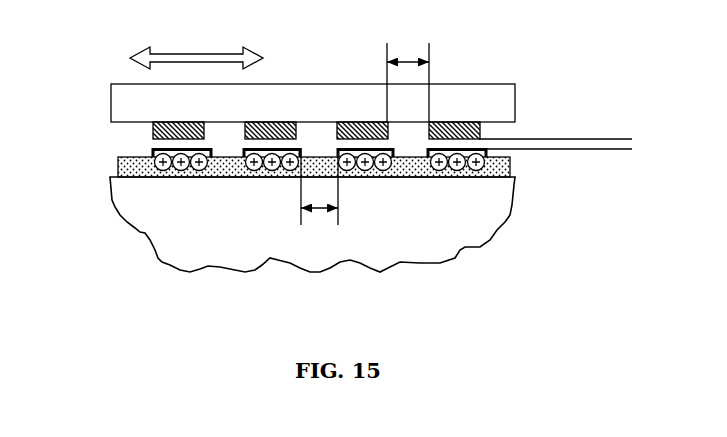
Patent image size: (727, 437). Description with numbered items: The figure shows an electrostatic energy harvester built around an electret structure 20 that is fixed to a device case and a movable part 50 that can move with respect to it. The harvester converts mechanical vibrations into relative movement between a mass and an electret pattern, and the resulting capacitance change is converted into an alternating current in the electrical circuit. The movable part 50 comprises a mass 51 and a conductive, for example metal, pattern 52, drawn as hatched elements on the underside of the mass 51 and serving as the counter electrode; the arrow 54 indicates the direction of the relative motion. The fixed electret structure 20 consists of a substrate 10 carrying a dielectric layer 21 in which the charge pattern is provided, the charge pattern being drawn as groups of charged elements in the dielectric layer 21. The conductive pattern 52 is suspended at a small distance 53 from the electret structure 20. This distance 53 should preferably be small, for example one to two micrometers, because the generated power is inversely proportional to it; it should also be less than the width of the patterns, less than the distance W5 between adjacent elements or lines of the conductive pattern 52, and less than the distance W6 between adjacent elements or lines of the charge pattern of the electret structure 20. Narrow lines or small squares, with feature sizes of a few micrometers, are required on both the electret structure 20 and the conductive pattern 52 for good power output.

The substrate 10 is at (467, 205).
The electret structure 20 is at (100, 150).
The dielectric layer 21 is at (513, 163).
The movable part 50 is at (100, 83).
The mass 51 is at (502, 95).
The conductive pattern 52 is at (193, 122).
The distance 53 is at (612, 112).
The lateral movement direction 54 is at (196, 45).
The distance between adjacent elements of the conductive pattern W5 is at (408, 70).
The distance between adjacent elements of the charge pattern W6 is at (322, 206).